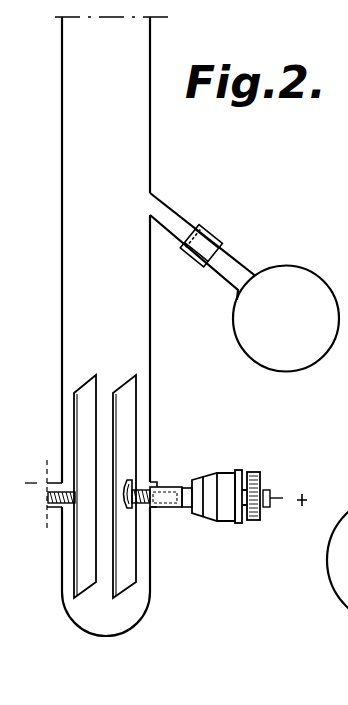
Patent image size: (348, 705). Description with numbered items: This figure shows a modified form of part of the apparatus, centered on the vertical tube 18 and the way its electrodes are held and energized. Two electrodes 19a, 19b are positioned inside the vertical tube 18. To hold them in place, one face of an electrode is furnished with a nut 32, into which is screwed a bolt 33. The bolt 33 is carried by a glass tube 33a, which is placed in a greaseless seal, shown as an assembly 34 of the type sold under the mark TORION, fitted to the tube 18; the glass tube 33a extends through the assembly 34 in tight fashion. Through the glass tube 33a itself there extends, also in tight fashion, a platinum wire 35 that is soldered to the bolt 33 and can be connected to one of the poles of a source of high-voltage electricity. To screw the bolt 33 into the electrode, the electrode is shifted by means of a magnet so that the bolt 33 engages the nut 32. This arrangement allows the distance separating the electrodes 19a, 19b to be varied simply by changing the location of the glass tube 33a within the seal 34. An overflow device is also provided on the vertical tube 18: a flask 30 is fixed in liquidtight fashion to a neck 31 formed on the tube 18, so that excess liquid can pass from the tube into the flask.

The vertical tube 18 is at (150, 349).
The electrode 19a is at (77, 422).
The electrode 19b is at (130, 402).
The flask 30 is at (282, 263).
The neck 31 is at (173, 213).
The nut 32 is at (125, 478).
The bolt 33 is at (58, 505).
The glass tube 33a is at (262, 510).
The assembly 34 is at (253, 458).
The platinum wire 35 is at (172, 487).